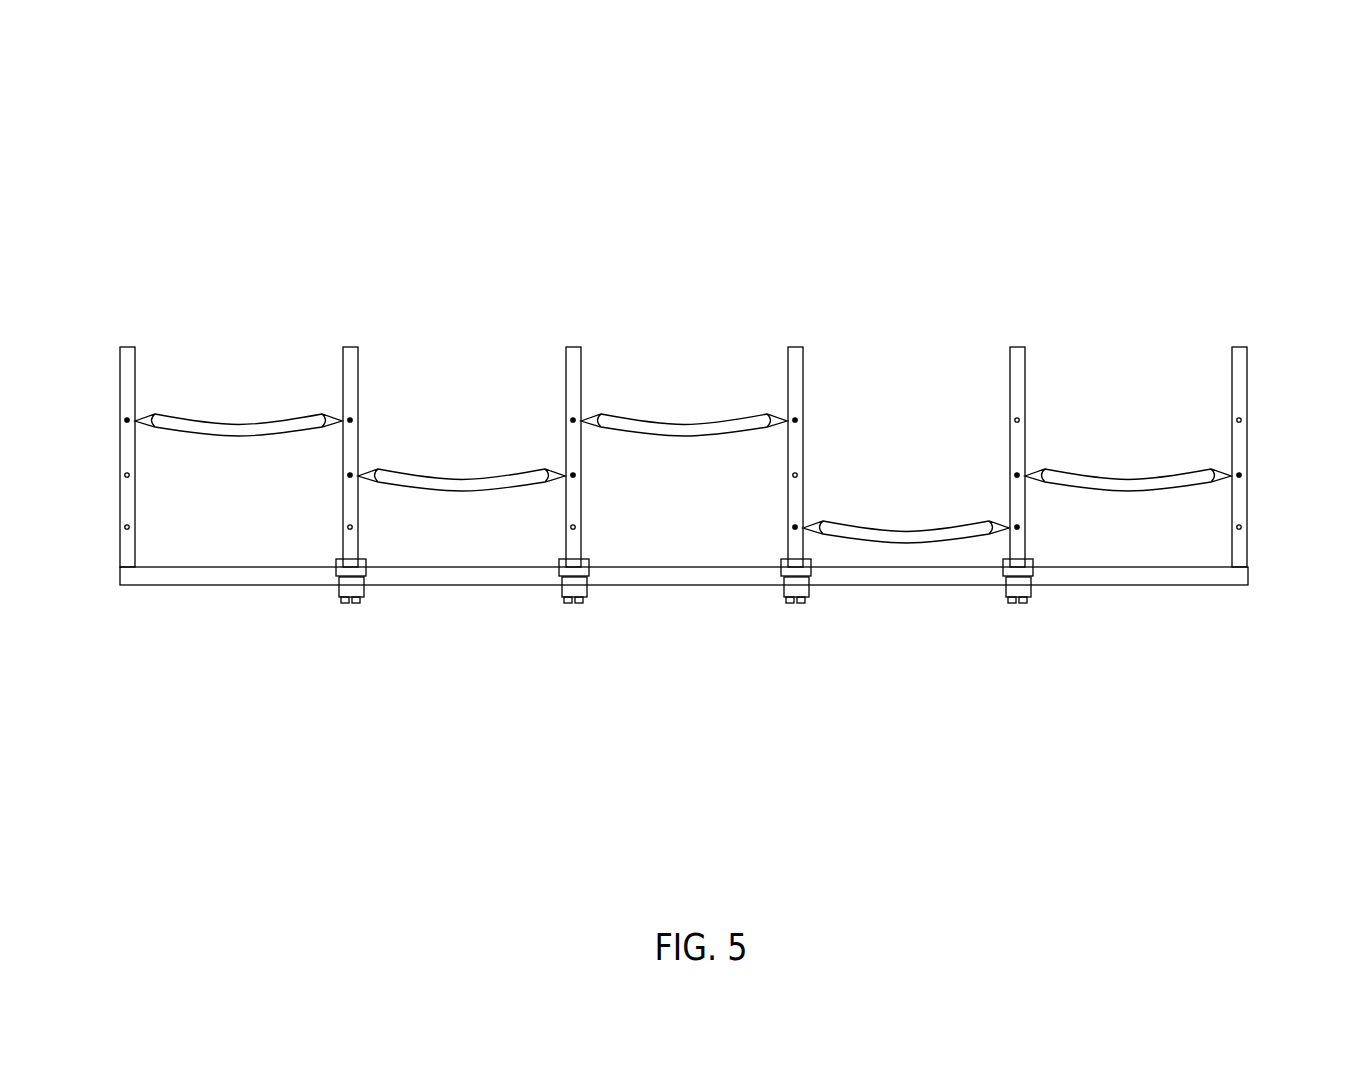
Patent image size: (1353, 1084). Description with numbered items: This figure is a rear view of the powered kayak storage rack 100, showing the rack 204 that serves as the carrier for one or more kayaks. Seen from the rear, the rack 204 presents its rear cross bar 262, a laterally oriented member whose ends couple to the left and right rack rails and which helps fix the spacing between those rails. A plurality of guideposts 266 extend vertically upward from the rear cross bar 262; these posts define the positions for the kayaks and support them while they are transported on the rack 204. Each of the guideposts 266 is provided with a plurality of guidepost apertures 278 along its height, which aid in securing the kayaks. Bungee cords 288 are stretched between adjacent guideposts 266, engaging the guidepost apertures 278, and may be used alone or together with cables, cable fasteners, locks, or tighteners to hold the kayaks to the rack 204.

The storage rack system 100 is at (157, 214).
The rack 204 is at (1254, 343).
The rear cross bar 262 is at (687, 579).
The guideposts 266 is at (575, 350).
The guidepost apertures 278 is at (797, 515).
The bungee cords 288 is at (1121, 483).